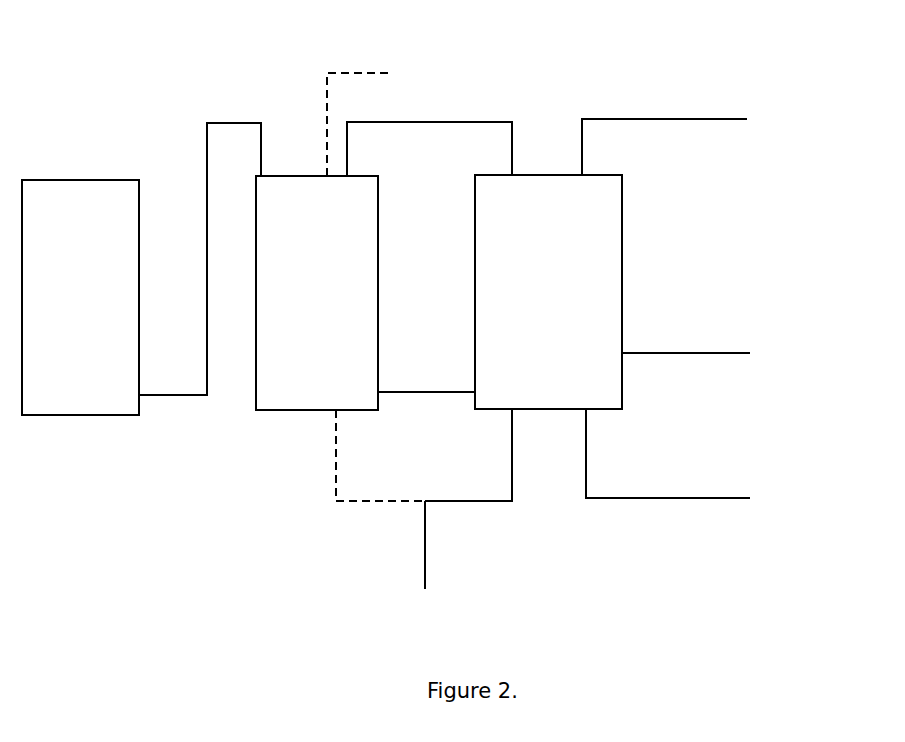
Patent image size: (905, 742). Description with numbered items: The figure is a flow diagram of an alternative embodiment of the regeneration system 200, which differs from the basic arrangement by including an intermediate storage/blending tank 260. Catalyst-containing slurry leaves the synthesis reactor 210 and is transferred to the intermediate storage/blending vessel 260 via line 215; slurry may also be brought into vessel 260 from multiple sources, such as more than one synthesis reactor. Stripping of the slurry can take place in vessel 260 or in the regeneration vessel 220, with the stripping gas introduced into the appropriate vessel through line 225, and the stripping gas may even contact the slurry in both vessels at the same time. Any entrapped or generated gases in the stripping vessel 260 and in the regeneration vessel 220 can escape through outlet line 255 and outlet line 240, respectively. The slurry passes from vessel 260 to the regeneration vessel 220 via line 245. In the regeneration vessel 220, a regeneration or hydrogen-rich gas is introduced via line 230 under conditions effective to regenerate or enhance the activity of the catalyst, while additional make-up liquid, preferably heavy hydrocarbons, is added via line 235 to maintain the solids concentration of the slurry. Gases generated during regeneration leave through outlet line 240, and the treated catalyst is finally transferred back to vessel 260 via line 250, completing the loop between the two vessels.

The regeneration system 200 is at (785, 205).
The synthesis reactor 210 is at (100, 180).
The line 215 is at (213, 123).
The regeneration vessel 220 is at (622, 265).
The line 225 is at (425, 546).
The line 230 is at (665, 498).
The line 235 is at (680, 353).
The outlet line 240 is at (665, 119).
The line 245 is at (410, 122).
The line 250 is at (397, 393).
The outlet line 255 is at (357, 73).
The intermediate storage/blending tank 260 is at (378, 295).